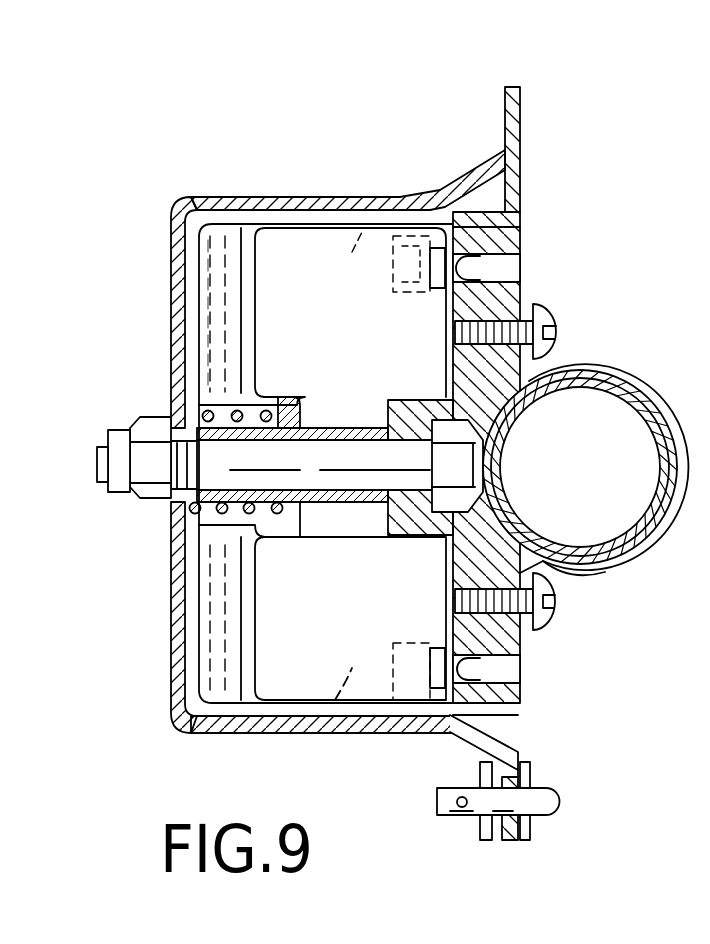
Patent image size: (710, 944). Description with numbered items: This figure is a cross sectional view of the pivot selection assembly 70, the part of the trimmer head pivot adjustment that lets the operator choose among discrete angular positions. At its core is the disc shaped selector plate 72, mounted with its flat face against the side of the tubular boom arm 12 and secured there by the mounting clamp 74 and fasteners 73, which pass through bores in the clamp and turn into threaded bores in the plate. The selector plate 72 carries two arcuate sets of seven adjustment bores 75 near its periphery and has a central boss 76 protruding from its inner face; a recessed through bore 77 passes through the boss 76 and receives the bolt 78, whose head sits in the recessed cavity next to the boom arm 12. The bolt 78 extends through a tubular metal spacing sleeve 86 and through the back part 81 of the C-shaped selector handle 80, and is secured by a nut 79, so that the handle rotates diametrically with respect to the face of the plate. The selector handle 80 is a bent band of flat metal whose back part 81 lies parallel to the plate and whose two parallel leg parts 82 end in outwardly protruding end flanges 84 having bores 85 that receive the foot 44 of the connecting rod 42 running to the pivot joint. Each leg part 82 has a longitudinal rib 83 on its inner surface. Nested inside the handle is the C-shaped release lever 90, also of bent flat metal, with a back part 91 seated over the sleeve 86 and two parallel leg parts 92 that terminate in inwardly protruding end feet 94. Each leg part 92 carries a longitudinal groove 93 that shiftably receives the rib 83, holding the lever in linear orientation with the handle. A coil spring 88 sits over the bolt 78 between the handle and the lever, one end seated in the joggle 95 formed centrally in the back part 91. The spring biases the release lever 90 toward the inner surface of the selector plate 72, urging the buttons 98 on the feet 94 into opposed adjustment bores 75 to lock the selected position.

The tubular boom arm 12 is at (622, 385).
The elongated metal rod 42 is at (560, 790).
The foot 44 is at (467, 815).
The pivot selection assembly 70 is at (122, 170).
The selector plate 72 is at (500, 302).
The fasteners 73 is at (545, 605).
The mounting clamp 74 is at (605, 572).
The adjustment bores 75 is at (520, 257).
The central boss 76 is at (413, 410).
The recessed through bore 77 is at (548, 386).
The bolt 78 is at (378, 462).
The nut 79 is at (140, 493).
The selector handle 80 is at (165, 390).
The back part 81 is at (168, 598).
The leg parts 82 is at (305, 200).
The rib 83 is at (232, 222).
The end flanges 84 is at (510, 168).
The bores 85 is at (512, 132).
The spacing sleeve 86 is at (340, 427).
The coil spring 88 is at (276, 392).
The release lever 90 is at (255, 652).
The back part 91 is at (248, 328).
The leg parts 92 is at (323, 224).
The groove 93 is at (362, 287).
The end feet 94 is at (440, 287).
The joggle 95 is at (290, 533).
The button 98 is at (445, 288).